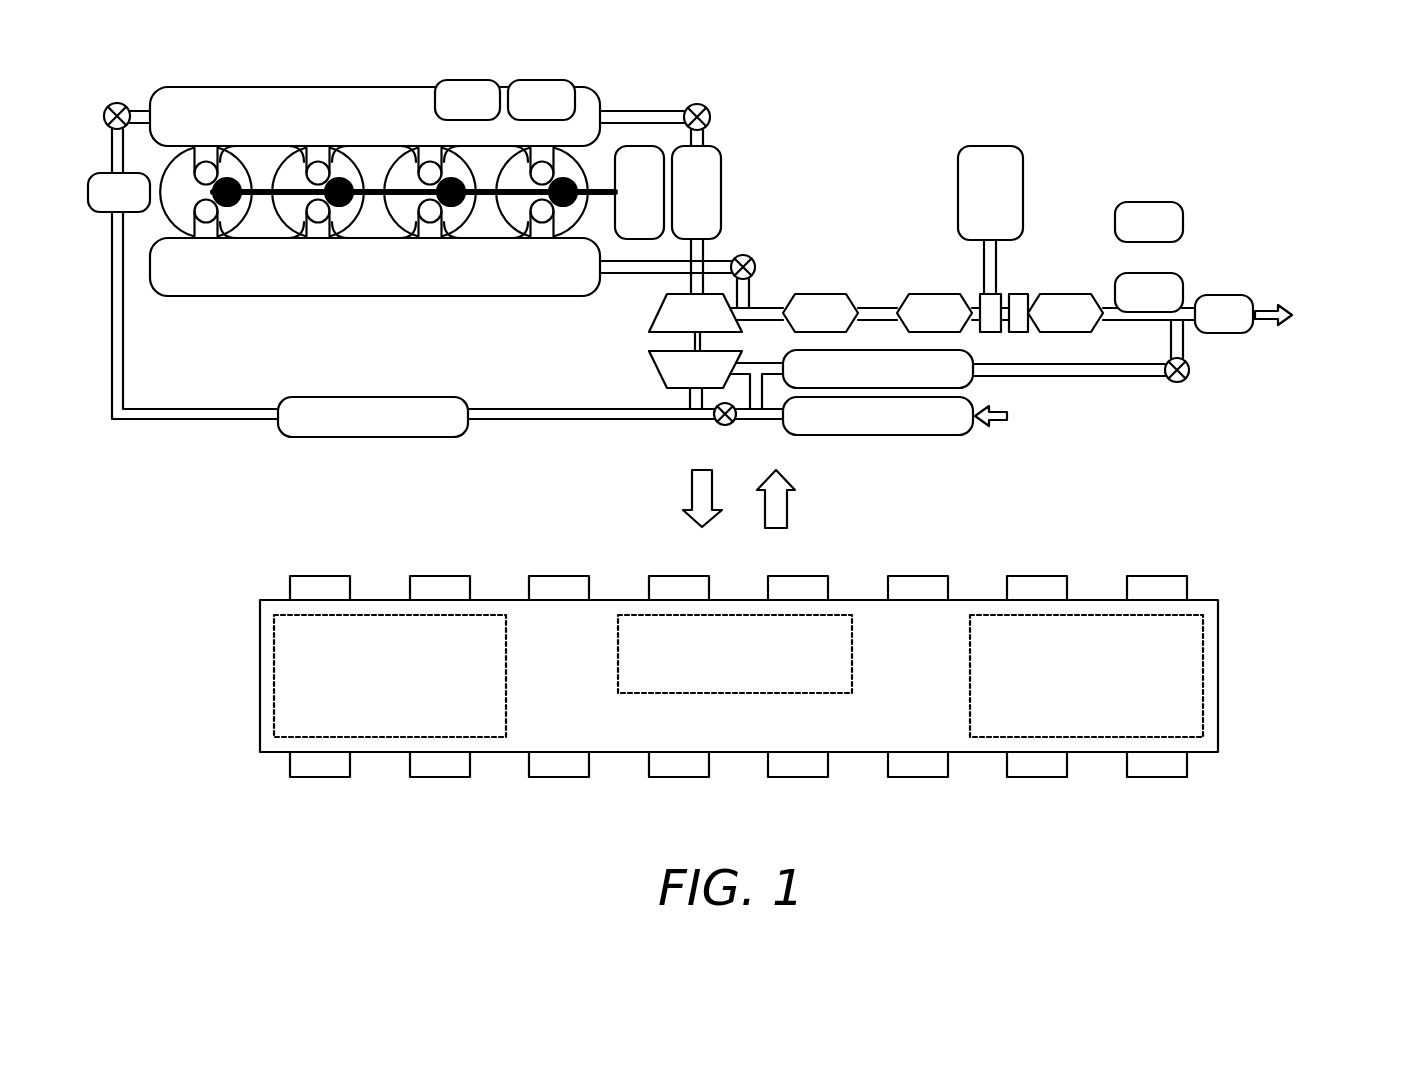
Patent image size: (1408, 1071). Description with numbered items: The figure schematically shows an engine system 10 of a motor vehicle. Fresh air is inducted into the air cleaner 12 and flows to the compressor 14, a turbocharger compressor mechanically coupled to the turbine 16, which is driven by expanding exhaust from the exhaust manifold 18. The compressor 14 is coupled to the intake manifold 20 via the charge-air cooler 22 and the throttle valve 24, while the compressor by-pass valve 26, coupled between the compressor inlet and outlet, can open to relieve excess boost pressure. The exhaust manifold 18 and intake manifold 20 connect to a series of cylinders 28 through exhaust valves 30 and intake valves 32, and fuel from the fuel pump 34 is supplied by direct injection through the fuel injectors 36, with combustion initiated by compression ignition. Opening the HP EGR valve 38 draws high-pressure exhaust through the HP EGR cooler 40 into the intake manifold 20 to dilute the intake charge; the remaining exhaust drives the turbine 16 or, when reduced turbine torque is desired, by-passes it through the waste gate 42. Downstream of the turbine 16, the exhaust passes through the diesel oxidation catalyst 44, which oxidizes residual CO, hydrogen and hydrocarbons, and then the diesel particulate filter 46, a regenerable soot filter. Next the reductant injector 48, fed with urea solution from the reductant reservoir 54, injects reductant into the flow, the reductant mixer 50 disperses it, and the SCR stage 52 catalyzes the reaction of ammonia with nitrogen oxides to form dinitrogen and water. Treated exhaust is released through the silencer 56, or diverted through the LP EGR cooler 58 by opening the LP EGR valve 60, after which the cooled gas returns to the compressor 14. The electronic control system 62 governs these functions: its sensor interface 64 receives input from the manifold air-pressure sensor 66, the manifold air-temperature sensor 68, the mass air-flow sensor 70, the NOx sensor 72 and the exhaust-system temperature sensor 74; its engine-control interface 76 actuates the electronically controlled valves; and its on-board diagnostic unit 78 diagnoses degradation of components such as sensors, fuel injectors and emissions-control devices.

The engine system 10 is at (1275, 156).
The air cleaner 12 is at (913, 416).
The compressor 14 is at (716, 380).
The turbine 16 is at (716, 315).
The exhaust manifold 18 is at (375, 267).
The intake manifold 20 is at (375, 116).
The charge-air cooler 22 is at (496, 417).
The throttle valve 24 is at (115, 104).
The compressor by-pass valve 26 is at (718, 428).
The cylinders 28 is at (158, 224).
The exhaust valves 30 is at (208, 222).
The intake valves 32 is at (205, 162).
The fuel pump 34 is at (639, 192).
The fuel injectors 36 is at (458, 202).
The HP EGR valve 38 is at (693, 106).
The HP EGR cooler 40 is at (696, 212).
The waste gate 42 is at (738, 256).
The diesel oxidation catalyst 44 is at (822, 293).
The diesel particulate filter 46 is at (933, 293).
The reductant injector 48 is at (983, 334).
The reductant mixer 50 is at (1018, 293).
The SCR stage 52 is at (1070, 293).
The reductant reservoir 54 is at (990, 220).
The silencer 56 is at (1291, 314).
The LP EGR cooler 58 is at (974, 369).
The LP EGR valve 60 is at (1182, 382).
The electronic control system 62 is at (739, 676).
The sensor interface 64 is at (390, 676).
The manifold air-pressure sensor 66 is at (468, 80).
The manifold air-temperature sensor 68 is at (540, 80).
The mass air-flow sensor 70 is at (88, 205).
The NOx sensor 72 is at (1187, 262).
The exhaust-system temperature sensor 74 is at (1187, 190).
The engine-control interface 76 is at (1086, 676).
The on-board diagnostic unit 78 is at (735, 654).